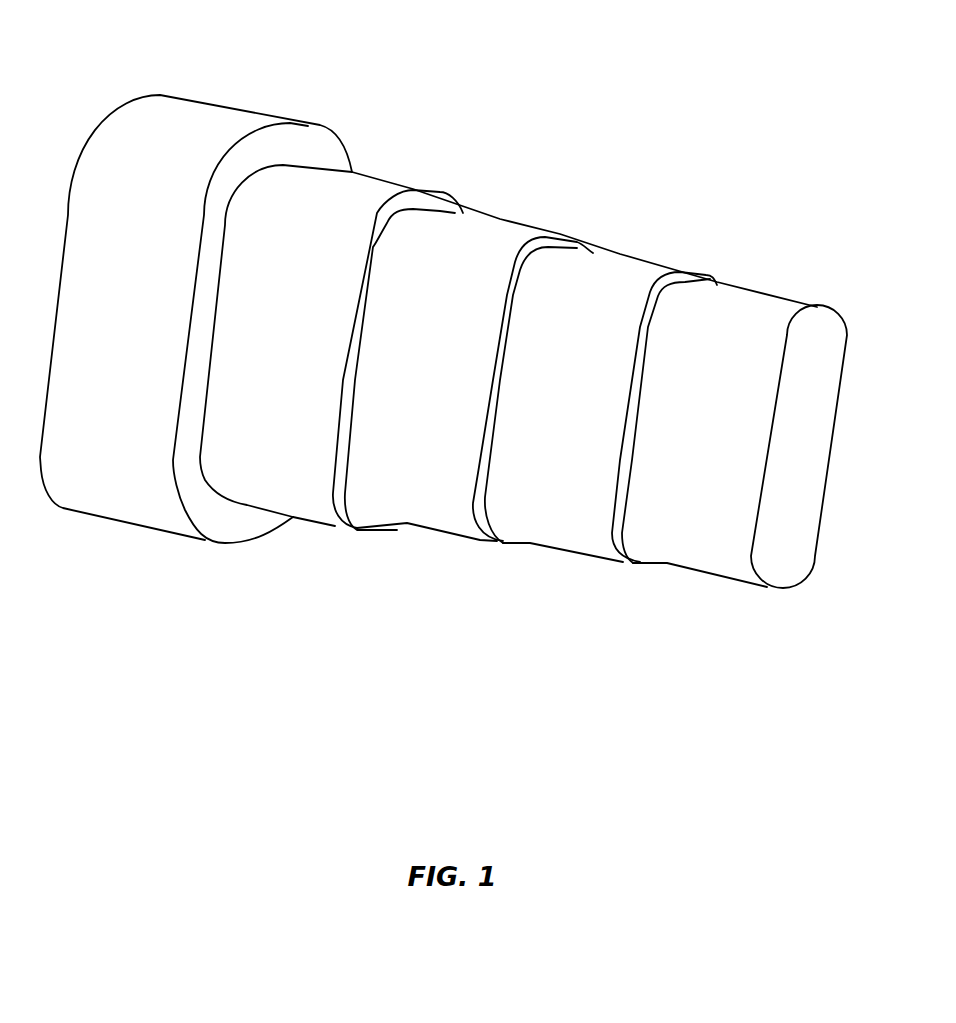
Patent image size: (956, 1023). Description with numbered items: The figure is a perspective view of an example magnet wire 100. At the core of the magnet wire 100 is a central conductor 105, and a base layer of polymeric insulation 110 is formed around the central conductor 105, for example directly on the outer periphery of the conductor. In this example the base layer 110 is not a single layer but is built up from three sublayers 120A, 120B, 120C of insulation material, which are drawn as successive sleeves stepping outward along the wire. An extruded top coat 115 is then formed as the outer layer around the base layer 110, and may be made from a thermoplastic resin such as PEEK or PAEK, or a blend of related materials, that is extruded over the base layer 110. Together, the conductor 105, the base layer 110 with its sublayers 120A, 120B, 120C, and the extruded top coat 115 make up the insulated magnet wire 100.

The magnet wire 100 is at (153, 613).
The central conductor 105 is at (757, 317).
The base layer of polymeric insulation 110 is at (227, 570).
The extruded top coat 115 is at (185, 148).
The sublayer 120A is at (617, 287).
The sublayer 120B is at (498, 257).
The sublayer 120C is at (357, 205).